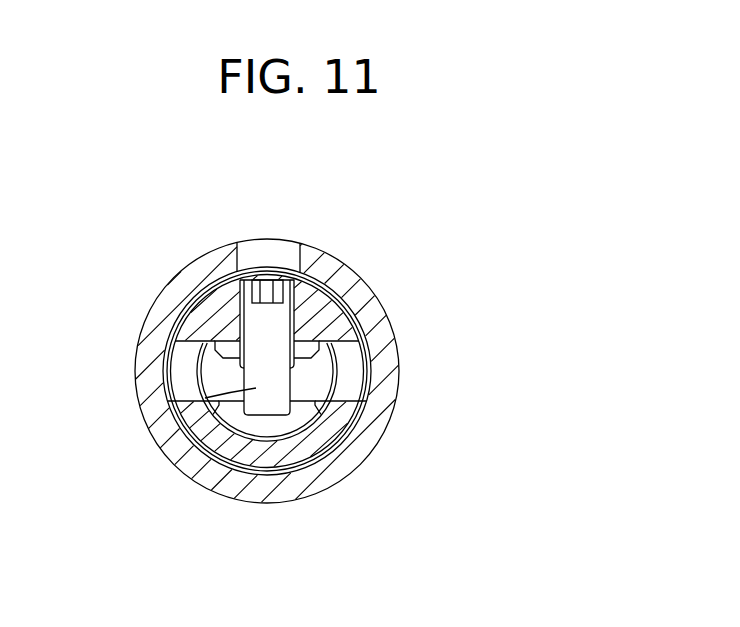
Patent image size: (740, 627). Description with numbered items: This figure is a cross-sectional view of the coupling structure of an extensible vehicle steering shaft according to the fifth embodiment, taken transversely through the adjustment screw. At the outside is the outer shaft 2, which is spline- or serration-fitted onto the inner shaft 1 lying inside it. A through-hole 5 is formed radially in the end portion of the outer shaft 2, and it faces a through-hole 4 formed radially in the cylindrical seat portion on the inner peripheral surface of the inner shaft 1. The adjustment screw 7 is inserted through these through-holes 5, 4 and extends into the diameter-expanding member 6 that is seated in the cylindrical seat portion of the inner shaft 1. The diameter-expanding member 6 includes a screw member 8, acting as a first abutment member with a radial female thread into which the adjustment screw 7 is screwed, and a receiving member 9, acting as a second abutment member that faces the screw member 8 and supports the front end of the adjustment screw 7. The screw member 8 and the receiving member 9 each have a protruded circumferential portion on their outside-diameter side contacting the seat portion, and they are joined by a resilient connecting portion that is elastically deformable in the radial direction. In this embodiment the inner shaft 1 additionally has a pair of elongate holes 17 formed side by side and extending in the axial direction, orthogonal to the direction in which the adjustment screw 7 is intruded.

The inner shaft 1 is at (296, 452).
The outer shaft 2 is at (340, 470).
The through-hole 4 is at (291, 287).
The through-hole 5 is at (268, 255).
The diameter-expanding member 6 is at (305, 387).
The adjustment screw 7 is at (168, 418).
The screw member 8 is at (350, 288).
The receiving member 9 is at (262, 437).
The elongate holes 17 is at (182, 378).